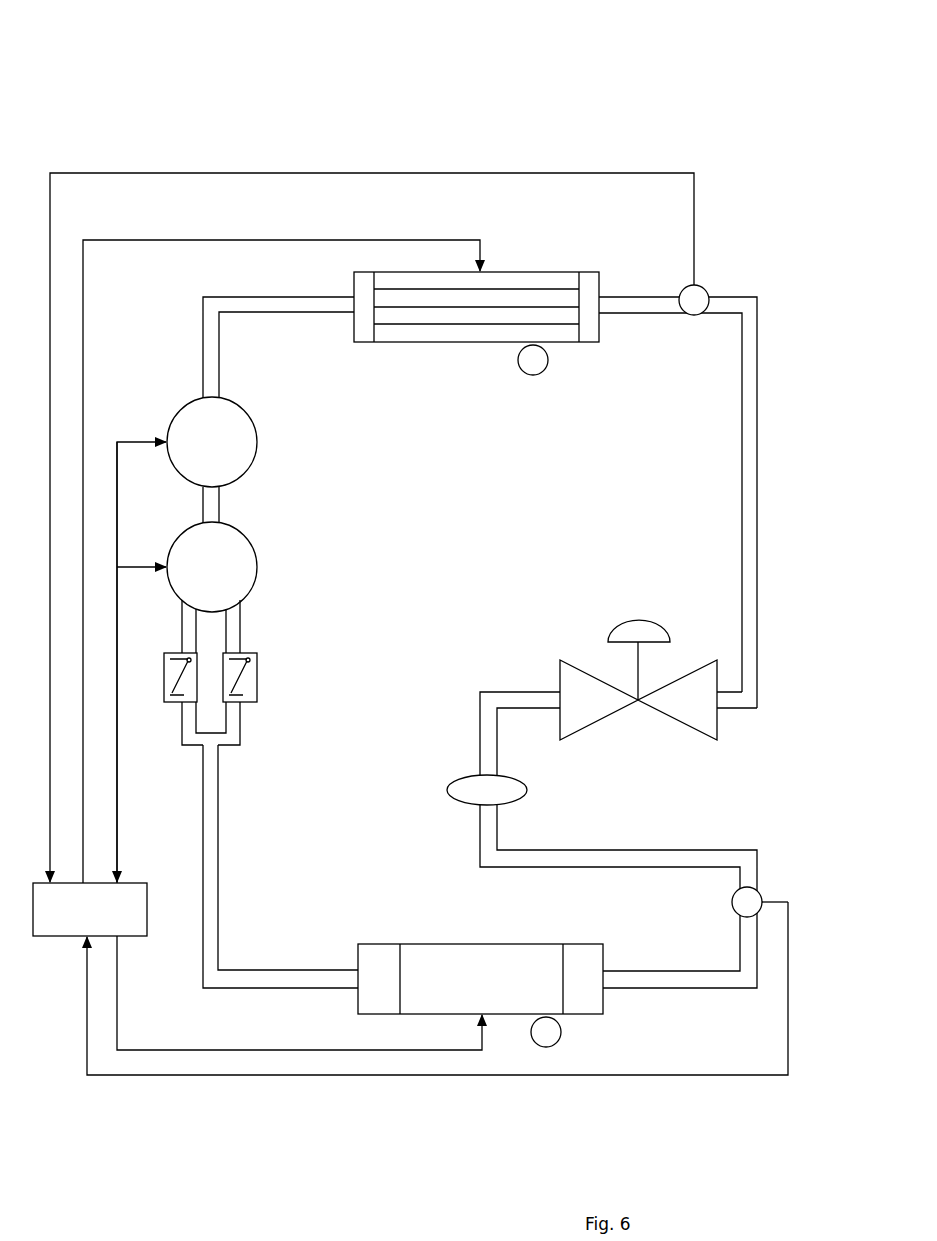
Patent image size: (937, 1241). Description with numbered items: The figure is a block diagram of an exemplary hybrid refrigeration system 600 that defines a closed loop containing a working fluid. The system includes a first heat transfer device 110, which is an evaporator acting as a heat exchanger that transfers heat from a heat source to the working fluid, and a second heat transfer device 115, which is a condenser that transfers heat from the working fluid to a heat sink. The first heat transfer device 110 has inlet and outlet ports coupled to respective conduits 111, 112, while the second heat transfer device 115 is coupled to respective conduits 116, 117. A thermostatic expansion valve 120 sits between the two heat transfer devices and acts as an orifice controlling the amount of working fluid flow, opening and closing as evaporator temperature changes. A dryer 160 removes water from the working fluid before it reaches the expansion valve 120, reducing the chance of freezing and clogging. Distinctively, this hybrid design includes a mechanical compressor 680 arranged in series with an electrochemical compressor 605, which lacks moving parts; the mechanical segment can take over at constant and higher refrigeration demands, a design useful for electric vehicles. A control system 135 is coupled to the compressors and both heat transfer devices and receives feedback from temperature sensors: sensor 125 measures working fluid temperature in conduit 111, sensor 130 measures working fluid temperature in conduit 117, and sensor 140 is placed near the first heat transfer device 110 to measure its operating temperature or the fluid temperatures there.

The hybrid refrigeration system 600 is at (208, 86).
The first heat transfer device 110 is at (440, 343).
The conduit 111 is at (638, 296).
The conduit 112 is at (265, 313).
The second heat transfer device 115 is at (462, 943).
The conduit 116 is at (249, 969).
The conduit 117 is at (675, 989).
The thermostatic expansion valve 120 is at (670, 735).
The temperature sensor 125 is at (694, 316).
The temperature sensor 130 is at (732, 902).
The control system 135 is at (62, 937).
The temperature sensor 140 is at (533, 376).
The dryer 160 is at (446, 790).
The electrochemical compressor 605 is at (257, 556).
The mechanical compressor 680 is at (257, 438).